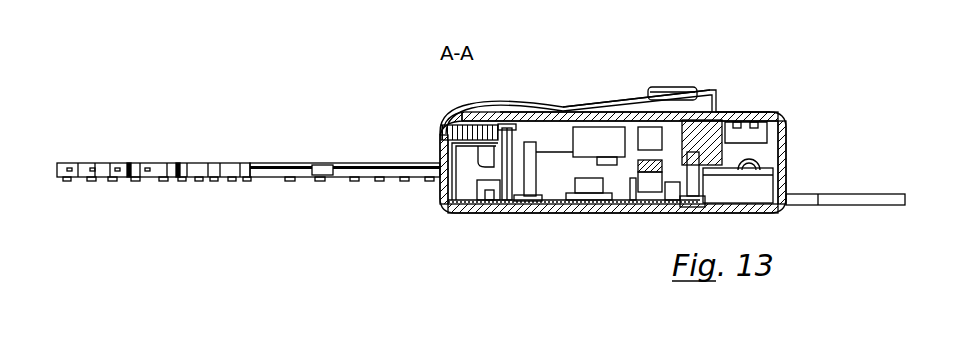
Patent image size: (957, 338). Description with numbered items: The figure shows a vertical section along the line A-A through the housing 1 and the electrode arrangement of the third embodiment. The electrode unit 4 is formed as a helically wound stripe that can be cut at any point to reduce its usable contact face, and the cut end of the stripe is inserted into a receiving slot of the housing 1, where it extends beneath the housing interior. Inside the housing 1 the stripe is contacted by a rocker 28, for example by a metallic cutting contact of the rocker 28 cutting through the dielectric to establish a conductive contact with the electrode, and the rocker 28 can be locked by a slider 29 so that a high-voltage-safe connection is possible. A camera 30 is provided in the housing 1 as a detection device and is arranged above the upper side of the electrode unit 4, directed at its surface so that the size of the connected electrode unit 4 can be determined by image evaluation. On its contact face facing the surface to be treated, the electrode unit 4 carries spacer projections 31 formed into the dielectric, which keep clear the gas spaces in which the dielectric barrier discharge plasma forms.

The housing 1 is at (791, 127).
The electrode unit 4 is at (200, 142).
The rocker 28 is at (641, 100).
The slider 29 is at (671, 87).
The camera 30 is at (437, 127).
The spacer projections 31 is at (322, 180).